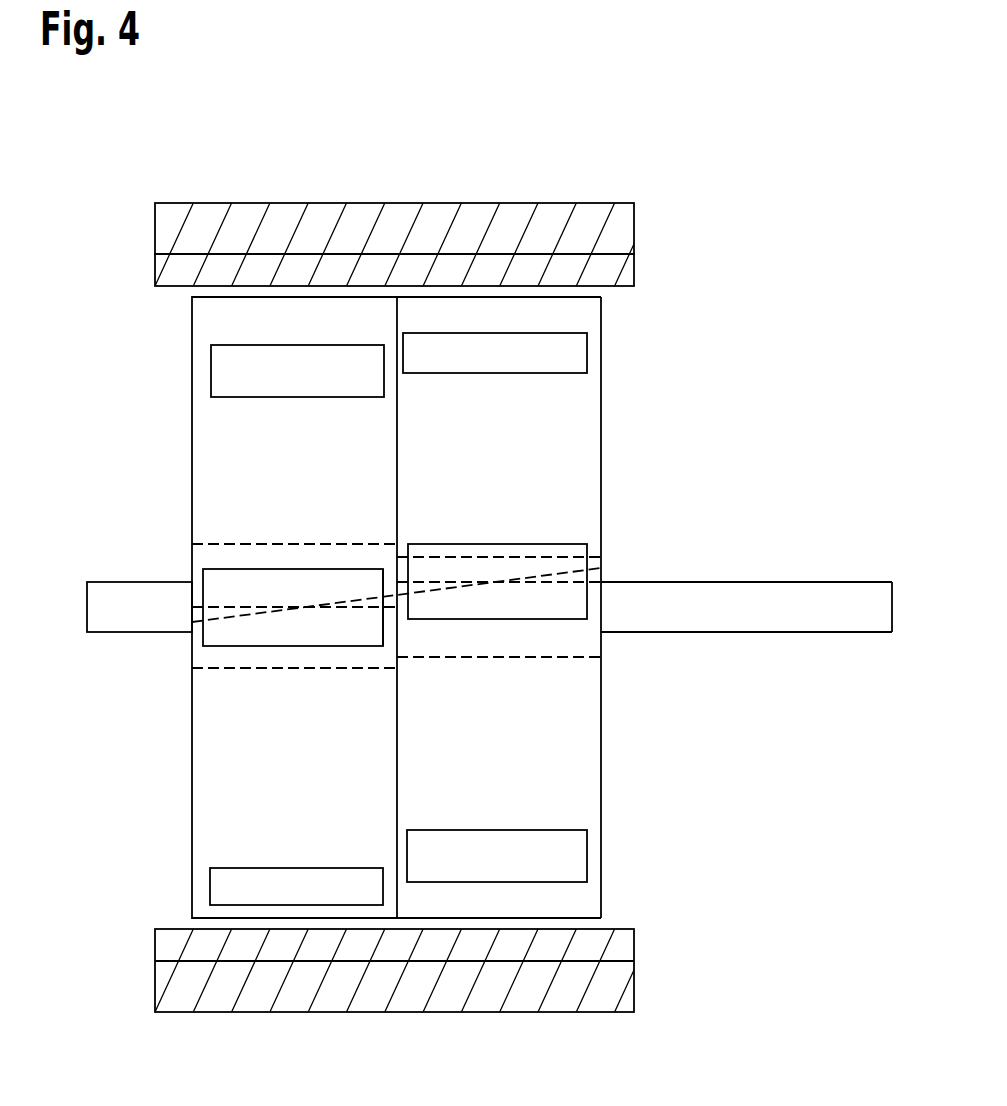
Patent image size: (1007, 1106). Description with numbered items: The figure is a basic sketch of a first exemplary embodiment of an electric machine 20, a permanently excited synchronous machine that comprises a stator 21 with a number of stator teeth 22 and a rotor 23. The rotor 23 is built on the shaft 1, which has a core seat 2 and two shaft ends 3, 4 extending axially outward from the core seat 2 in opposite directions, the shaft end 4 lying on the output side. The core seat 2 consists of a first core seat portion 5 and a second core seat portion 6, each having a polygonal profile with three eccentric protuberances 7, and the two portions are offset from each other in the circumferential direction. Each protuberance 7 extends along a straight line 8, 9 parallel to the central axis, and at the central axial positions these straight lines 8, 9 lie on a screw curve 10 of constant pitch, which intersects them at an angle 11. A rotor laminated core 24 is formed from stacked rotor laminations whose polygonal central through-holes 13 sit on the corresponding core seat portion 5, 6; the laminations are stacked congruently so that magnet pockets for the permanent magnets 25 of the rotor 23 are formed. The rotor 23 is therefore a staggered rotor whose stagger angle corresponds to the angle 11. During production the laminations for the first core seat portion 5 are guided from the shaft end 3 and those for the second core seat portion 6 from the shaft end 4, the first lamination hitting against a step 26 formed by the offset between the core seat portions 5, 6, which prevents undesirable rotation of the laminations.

The shaft 1 is at (755, 582).
The core seat 2 is at (377, 722).
The shaft end 3 is at (87, 607).
The shaft end 4 is at (893, 607).
The first core seat portion 5 is at (275, 544).
The second core seat portion 6 is at (465, 657).
The eccentric protuberance 7 is at (396, 541).
The straight line 8 is at (342, 610).
The straight line 9 is at (547, 583).
The screw curve 10 is at (565, 573).
The angle 11 is at (383, 597).
The central through-hole 13 is at (396, 658).
The electric machine 20 is at (806, 107).
The stator 21 is at (478, 203).
The stator tooth 22 is at (634, 270).
The rotor 23 is at (330, 581).
The rotor laminated core 24 is at (601, 445).
The permanent magnet 25 is at (211, 372).
The step 26 is at (399, 660).